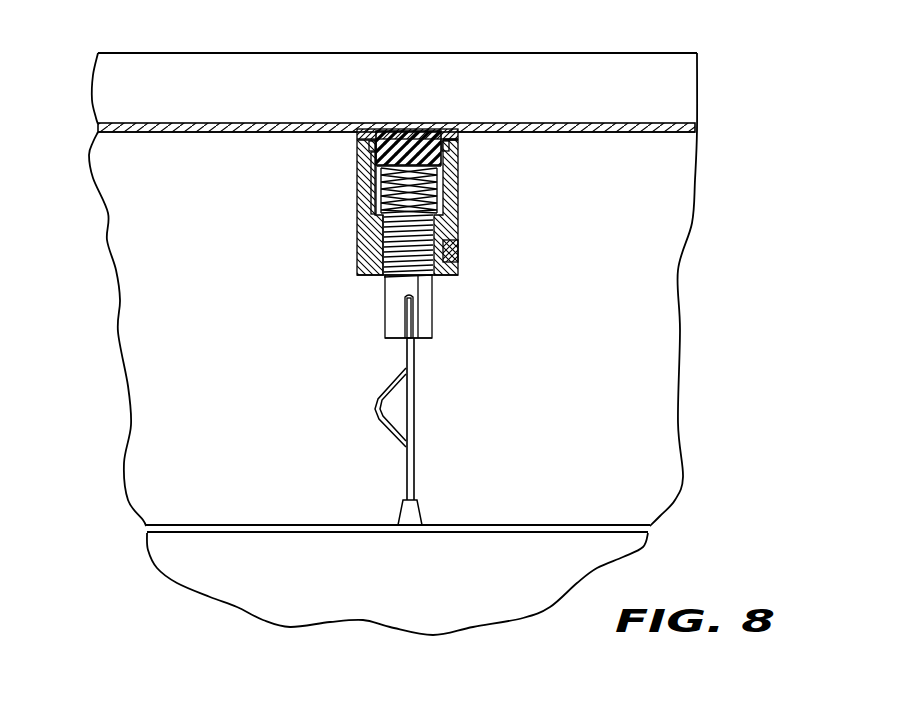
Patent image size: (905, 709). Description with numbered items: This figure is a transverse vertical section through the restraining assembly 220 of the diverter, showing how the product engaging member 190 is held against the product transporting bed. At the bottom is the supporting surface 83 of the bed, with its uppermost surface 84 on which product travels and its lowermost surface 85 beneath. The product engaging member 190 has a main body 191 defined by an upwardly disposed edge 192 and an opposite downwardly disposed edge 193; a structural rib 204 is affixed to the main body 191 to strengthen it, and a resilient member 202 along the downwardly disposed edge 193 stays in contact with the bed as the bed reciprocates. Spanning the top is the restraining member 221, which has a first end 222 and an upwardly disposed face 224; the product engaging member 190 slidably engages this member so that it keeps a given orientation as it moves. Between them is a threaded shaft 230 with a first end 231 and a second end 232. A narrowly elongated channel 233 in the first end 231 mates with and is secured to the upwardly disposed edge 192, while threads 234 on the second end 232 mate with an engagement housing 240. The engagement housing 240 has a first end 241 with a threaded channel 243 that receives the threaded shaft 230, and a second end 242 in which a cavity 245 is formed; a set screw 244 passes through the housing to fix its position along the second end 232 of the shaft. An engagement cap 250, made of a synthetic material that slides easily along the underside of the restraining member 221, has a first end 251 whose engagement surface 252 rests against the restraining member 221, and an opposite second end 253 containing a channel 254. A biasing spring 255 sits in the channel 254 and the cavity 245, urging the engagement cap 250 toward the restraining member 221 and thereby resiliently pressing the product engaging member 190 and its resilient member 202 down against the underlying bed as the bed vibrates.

The supporting surface 83 is at (552, 513).
The uppermost surface 84 is at (245, 523).
The lowermost surface 85 is at (462, 540).
The product engaging member 190 is at (459, 398).
The main body 191 is at (415, 430).
The upwardly disposed edge 192 is at (412, 302).
The downwardly disposed edge 193 is at (419, 503).
The resilient member 202 is at (404, 517).
The structural rib 204 is at (374, 408).
The restraining assembly 220 is at (252, 176).
The restraining member 221 is at (577, 67).
The first end 222 is at (115, 134).
The upwardly disposed face 224 is at (165, 124).
The threaded shaft 230 is at (433, 328).
The first end 231 is at (390, 339).
The second end 232 is at (447, 230).
The narrowly elongated channel 233 is at (405, 318).
The threads 234 is at (383, 273).
The engagement housing 240 is at (477, 178).
The first end 241 is at (358, 242).
The second end 242 is at (458, 150).
The threaded channel 243 is at (382, 215).
The set screw 244 is at (456, 250).
The cavity 245 is at (387, 126).
The engagement cap 250 is at (433, 134).
The first end 251 is at (450, 133).
The engagement surface 252 is at (402, 131).
The second end 253 is at (445, 199).
The channel 254 is at (377, 199).
The biasing spring 255 is at (372, 172).